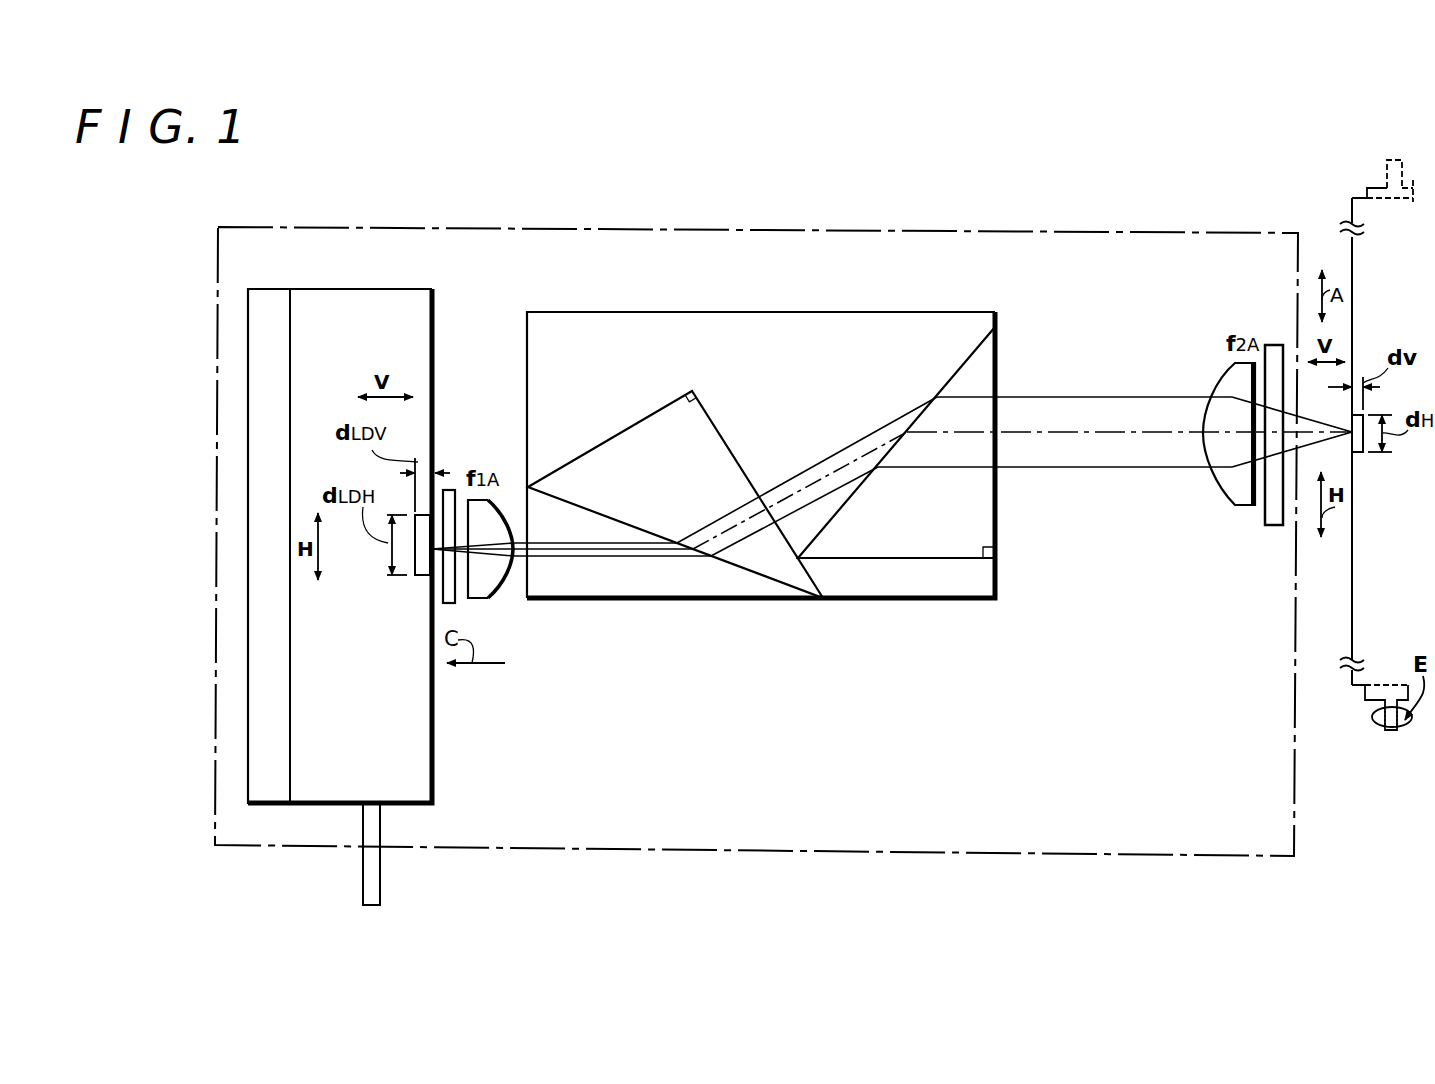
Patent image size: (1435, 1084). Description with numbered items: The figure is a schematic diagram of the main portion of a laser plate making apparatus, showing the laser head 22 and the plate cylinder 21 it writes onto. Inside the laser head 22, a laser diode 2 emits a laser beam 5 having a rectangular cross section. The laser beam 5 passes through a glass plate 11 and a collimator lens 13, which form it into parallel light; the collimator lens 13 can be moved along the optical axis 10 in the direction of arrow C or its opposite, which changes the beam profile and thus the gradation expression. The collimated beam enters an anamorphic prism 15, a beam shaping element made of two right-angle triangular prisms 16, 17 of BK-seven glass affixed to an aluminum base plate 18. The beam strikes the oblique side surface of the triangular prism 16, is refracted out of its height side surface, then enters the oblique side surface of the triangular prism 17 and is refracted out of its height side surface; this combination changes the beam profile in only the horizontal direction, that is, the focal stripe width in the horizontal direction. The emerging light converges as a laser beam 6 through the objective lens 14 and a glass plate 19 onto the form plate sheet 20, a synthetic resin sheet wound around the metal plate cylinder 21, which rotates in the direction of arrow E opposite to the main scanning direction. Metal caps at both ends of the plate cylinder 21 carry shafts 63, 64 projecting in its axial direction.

The laser diode 2 is at (308, 288).
The laser beam 5 is at (422, 575).
The laser beam 6 is at (1355, 453).
The optical axis 10 is at (645, 550).
The glass plate 11 is at (450, 488).
The collimator lens 13 is at (485, 598).
The objective lens 14 is at (1238, 507).
The anamorphic prism 15 is at (766, 432).
The triangular prism 16 is at (717, 427).
The triangular prism 17 is at (960, 362).
The base plate 18 is at (587, 311).
The glass plate 19 is at (1275, 343).
The form plate sheet 20 is at (1350, 215).
The plate cylinder 21 is at (1367, 188).
The laser head 22 is at (763, 230).
The shaft 63 is at (1392, 732).
The shaft 64 is at (1403, 173).